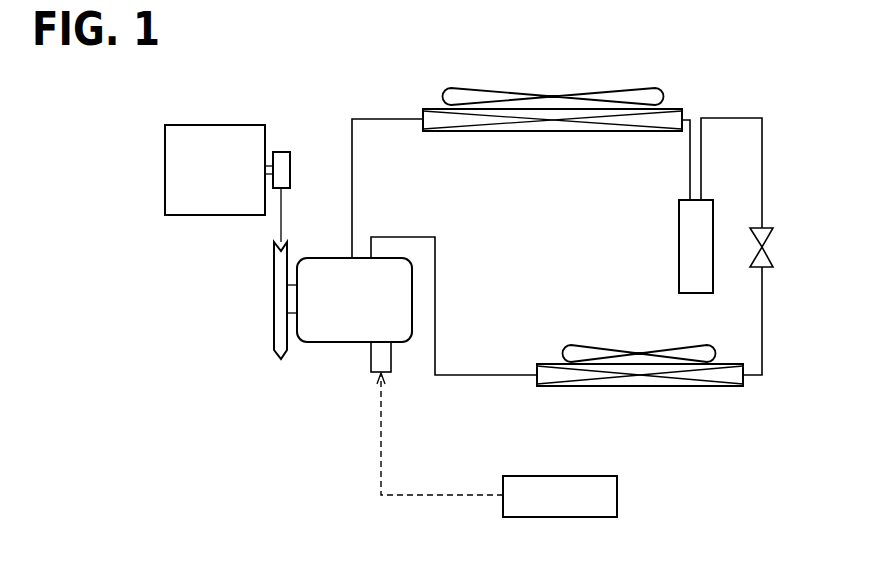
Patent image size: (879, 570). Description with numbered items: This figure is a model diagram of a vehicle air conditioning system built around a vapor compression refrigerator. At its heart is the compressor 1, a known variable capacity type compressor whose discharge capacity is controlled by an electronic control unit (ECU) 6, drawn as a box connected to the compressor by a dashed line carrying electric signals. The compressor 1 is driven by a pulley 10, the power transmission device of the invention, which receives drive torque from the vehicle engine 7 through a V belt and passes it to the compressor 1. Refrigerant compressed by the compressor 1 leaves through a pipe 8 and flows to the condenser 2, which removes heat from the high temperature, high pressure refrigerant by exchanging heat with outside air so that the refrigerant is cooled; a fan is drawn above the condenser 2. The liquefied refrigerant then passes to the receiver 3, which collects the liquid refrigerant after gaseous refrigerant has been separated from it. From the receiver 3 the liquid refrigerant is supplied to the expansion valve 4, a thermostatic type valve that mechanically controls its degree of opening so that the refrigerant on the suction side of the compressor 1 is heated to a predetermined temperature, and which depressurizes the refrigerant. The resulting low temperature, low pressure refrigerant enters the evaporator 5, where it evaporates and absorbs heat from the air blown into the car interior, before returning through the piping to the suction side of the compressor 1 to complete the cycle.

The compressor 1 is at (327, 333).
The condenser 2 is at (548, 132).
The receiver 3 is at (679, 243).
The expansion valve 4 is at (770, 250).
The evaporator 5 is at (692, 387).
The electronic control unit (ECU) 6 is at (618, 493).
The vehicle engine 7 is at (213, 125).
The refrigerant pipe 8 is at (352, 155).
The pulley 10 is at (280, 262).